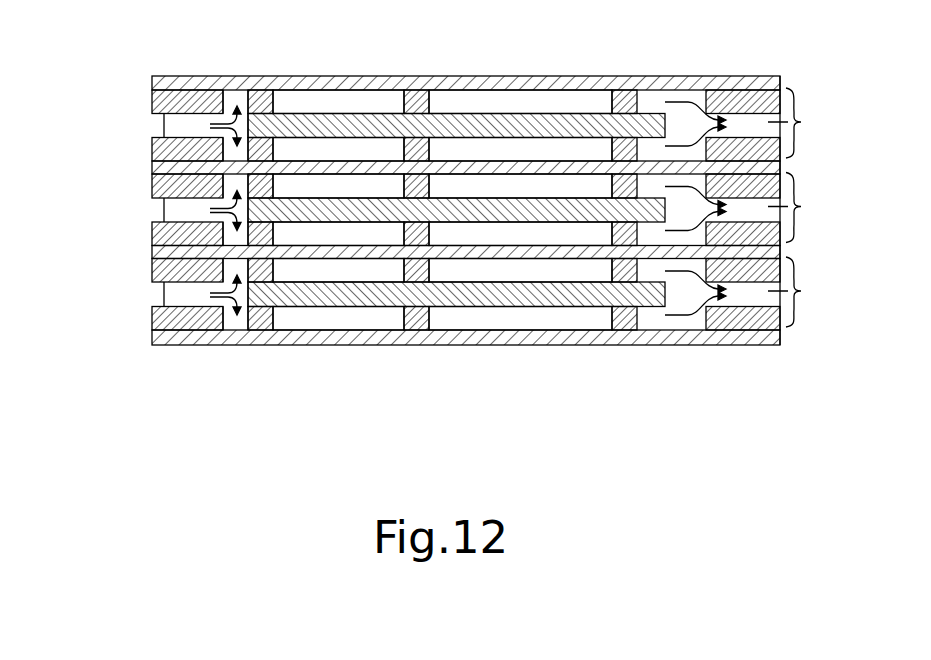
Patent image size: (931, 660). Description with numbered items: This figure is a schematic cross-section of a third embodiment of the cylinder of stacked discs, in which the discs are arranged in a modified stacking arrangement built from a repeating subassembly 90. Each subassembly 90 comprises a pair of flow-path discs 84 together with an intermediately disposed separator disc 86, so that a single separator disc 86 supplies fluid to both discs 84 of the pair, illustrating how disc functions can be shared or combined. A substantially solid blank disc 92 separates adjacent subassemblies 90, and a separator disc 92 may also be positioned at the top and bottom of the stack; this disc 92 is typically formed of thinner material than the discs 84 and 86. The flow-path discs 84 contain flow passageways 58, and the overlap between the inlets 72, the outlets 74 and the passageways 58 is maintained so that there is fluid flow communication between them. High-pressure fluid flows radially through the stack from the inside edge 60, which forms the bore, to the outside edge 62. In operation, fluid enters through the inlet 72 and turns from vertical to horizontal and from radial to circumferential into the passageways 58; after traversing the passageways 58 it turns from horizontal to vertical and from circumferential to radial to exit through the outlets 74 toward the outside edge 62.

The flow passageway 58 is at (325, 100).
The inside edge 60 is at (152, 318).
The outside edge 62 is at (782, 314).
The inlet 72 is at (152, 125).
The outlet 74 is at (796, 107).
The flow-path disc 84 is at (490, 76).
The separator disc 86 is at (563, 112).
The subassembly 90 is at (806, 207).
The blank disc 92 is at (256, 76).